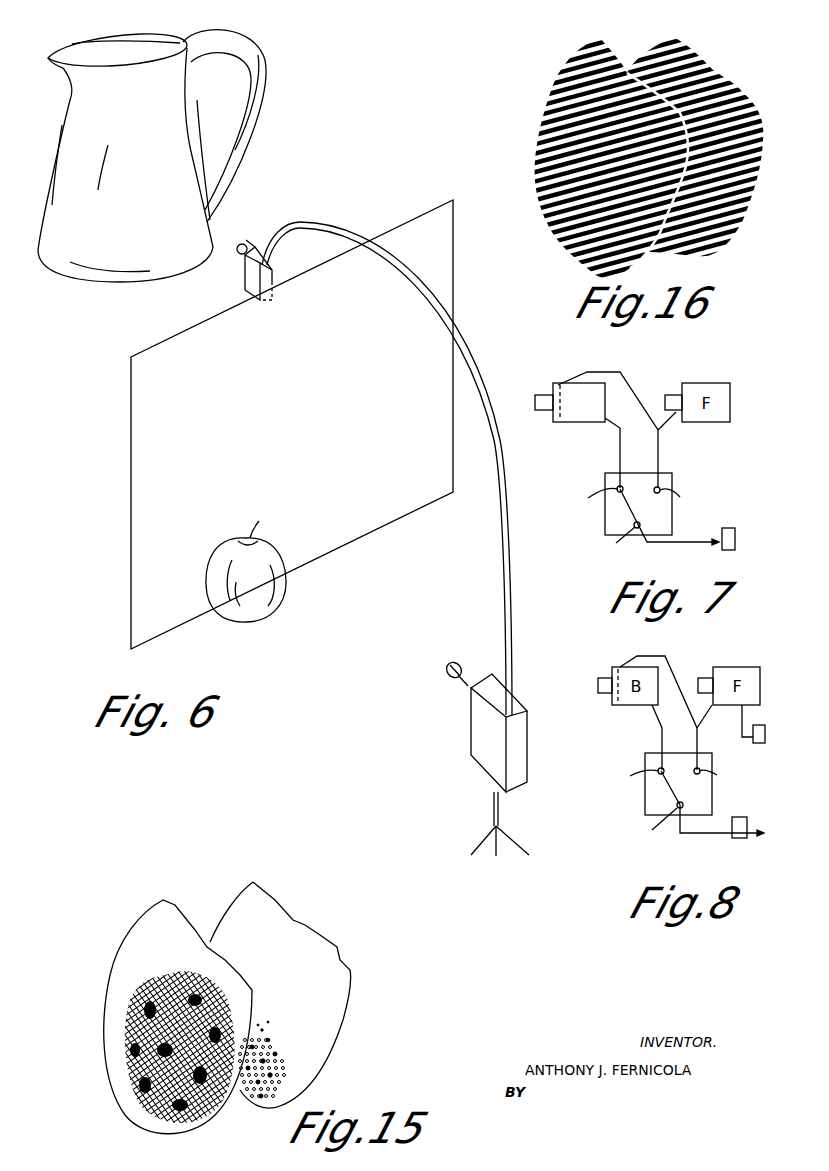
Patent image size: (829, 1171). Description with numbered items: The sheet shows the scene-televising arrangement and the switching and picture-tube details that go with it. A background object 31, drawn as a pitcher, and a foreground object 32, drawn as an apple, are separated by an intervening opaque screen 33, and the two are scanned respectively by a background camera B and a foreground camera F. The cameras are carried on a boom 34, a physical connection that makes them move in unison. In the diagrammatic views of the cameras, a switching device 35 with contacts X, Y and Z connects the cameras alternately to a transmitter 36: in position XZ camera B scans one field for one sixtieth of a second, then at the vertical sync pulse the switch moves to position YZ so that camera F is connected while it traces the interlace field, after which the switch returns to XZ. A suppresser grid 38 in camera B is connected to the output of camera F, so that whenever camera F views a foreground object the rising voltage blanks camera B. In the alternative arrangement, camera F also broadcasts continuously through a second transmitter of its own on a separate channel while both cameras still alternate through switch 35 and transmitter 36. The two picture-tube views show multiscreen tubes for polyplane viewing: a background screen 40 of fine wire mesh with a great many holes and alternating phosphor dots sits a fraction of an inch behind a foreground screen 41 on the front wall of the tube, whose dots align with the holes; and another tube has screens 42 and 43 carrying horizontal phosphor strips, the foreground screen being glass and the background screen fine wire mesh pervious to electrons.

In FIG. 6, the background object 31 is at (80, 270).
In FIG. 6, the foreground object 32 is at (265, 608).
In FIG. 6, the opaque screen 33 is at (140, 553).
In FIG. 6, the boom 34 is at (508, 541).
In FIG. 6, the background camera B is at (244, 279).
In FIG. 6, the foreground camera F is at (523, 752).
In FIG. 7, the suppresser grid 38 is at (555, 421).
In FIG. 7, the switching device 35 is at (672, 518).
In FIG. 8, the switching device 35 is at (650, 795).
In FIG. 7, the transmitter 36 is at (736, 532).
In FIG. 8, the transmitter 36 is at (736, 838).
In FIG. 15, the background screen 40 is at (120, 985).
In FIG. 15, the foreground screen 41 is at (330, 1040).
In FIG. 16, the screen 42 is at (540, 208).
In FIG. 16, the screen 43 is at (745, 194).